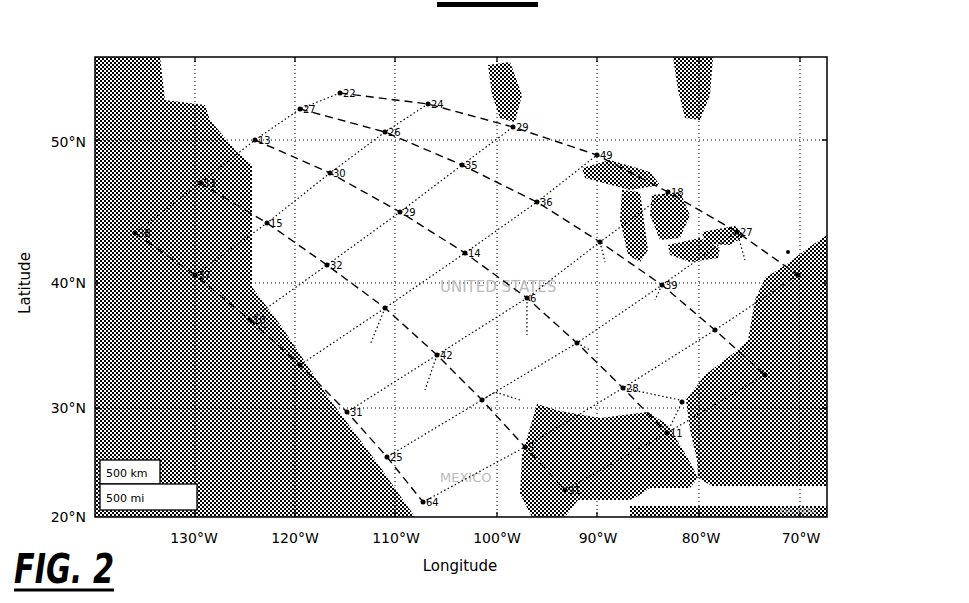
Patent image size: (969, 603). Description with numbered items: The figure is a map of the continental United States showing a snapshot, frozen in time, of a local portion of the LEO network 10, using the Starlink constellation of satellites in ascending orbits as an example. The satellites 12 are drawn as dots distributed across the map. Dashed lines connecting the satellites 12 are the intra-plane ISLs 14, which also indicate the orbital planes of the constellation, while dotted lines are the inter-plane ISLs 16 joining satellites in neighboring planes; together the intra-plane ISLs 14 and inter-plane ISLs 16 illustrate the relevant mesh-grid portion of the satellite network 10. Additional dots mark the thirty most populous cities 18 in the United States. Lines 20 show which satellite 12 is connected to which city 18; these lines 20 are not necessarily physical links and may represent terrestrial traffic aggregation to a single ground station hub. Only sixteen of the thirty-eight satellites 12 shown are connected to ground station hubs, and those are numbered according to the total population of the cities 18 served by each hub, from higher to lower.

The LEO network 10 is at (850, 120).
The satellites 12 is at (772, 354).
The intra-plane ISLs 14 is at (653, 163).
The inter-plane ISLs 16 is at (694, 246).
The cities 18 is at (800, 242).
The lines 20 is at (688, 409).